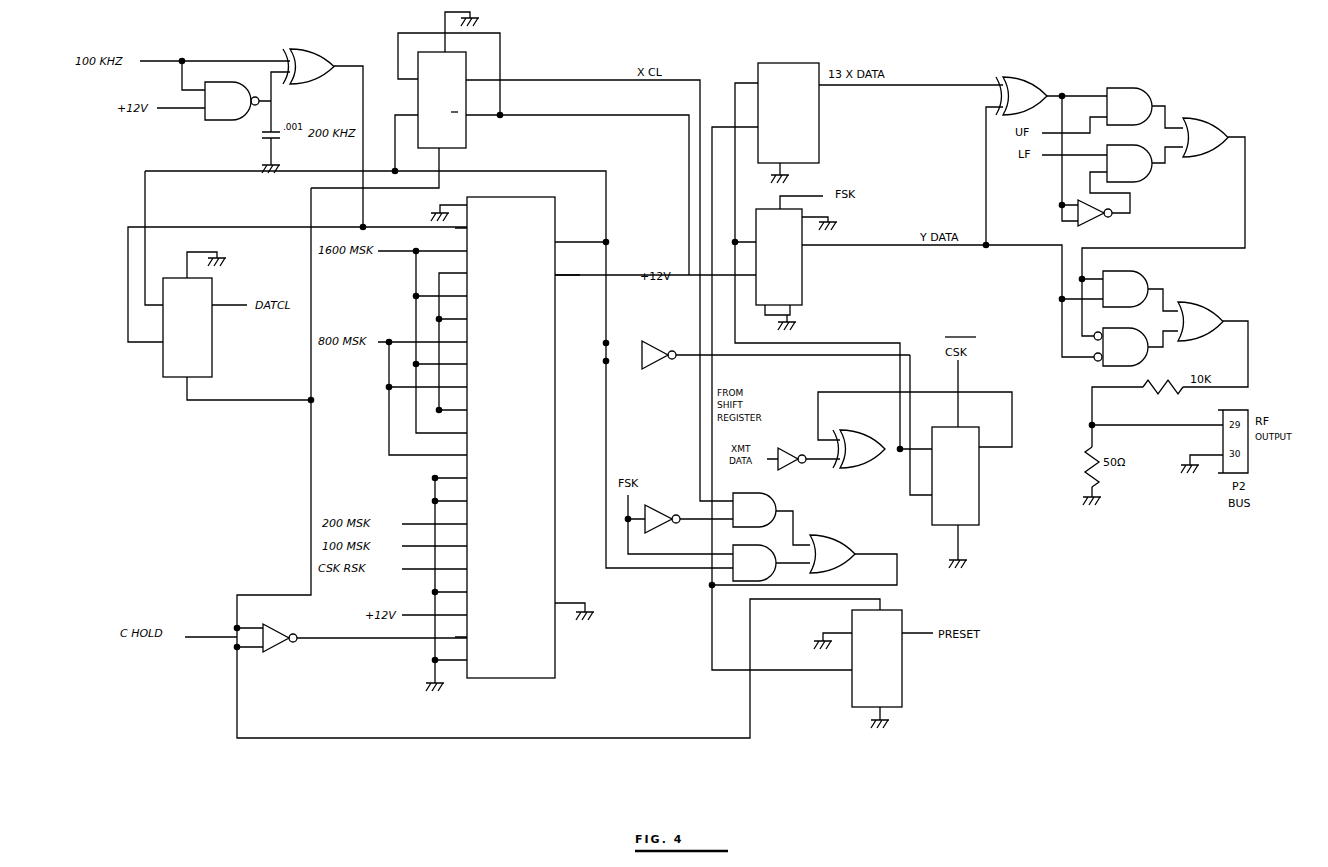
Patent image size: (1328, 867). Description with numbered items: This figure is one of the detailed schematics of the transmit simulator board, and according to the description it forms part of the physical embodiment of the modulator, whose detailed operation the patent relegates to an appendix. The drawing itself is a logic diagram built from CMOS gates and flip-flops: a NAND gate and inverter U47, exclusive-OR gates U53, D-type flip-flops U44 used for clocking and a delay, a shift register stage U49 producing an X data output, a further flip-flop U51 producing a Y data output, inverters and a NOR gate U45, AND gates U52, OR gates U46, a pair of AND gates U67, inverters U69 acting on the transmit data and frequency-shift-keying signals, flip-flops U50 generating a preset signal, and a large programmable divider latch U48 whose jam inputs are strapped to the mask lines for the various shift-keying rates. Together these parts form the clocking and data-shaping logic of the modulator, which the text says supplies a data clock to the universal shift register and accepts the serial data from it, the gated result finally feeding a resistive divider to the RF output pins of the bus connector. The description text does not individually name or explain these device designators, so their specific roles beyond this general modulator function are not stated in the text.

The 4011 NAND gate / inverter U47 is at (252, 375).
The 4030 exclusive-OR gate U53 is at (665, 249).
The 4013 D flip-flop U44 is at (336, 216).
The 4015 shift register U49 is at (779, 119).
The 4013 D flip-flop U51 is at (778, 258).
The 4001 NOR gate / inverter U45 is at (898, 288).
The 4081 AND gate U52 is at (1125, 188).
The 4071 OR gate U46 is at (1019, 335).
The 4081 AND gate U67 is at (754, 535).
The inverter U69 is at (727, 480).
The 4013 D flip-flop U50 is at (927, 565).
The 4059 programmable divider latch U48 is at (492, 438).